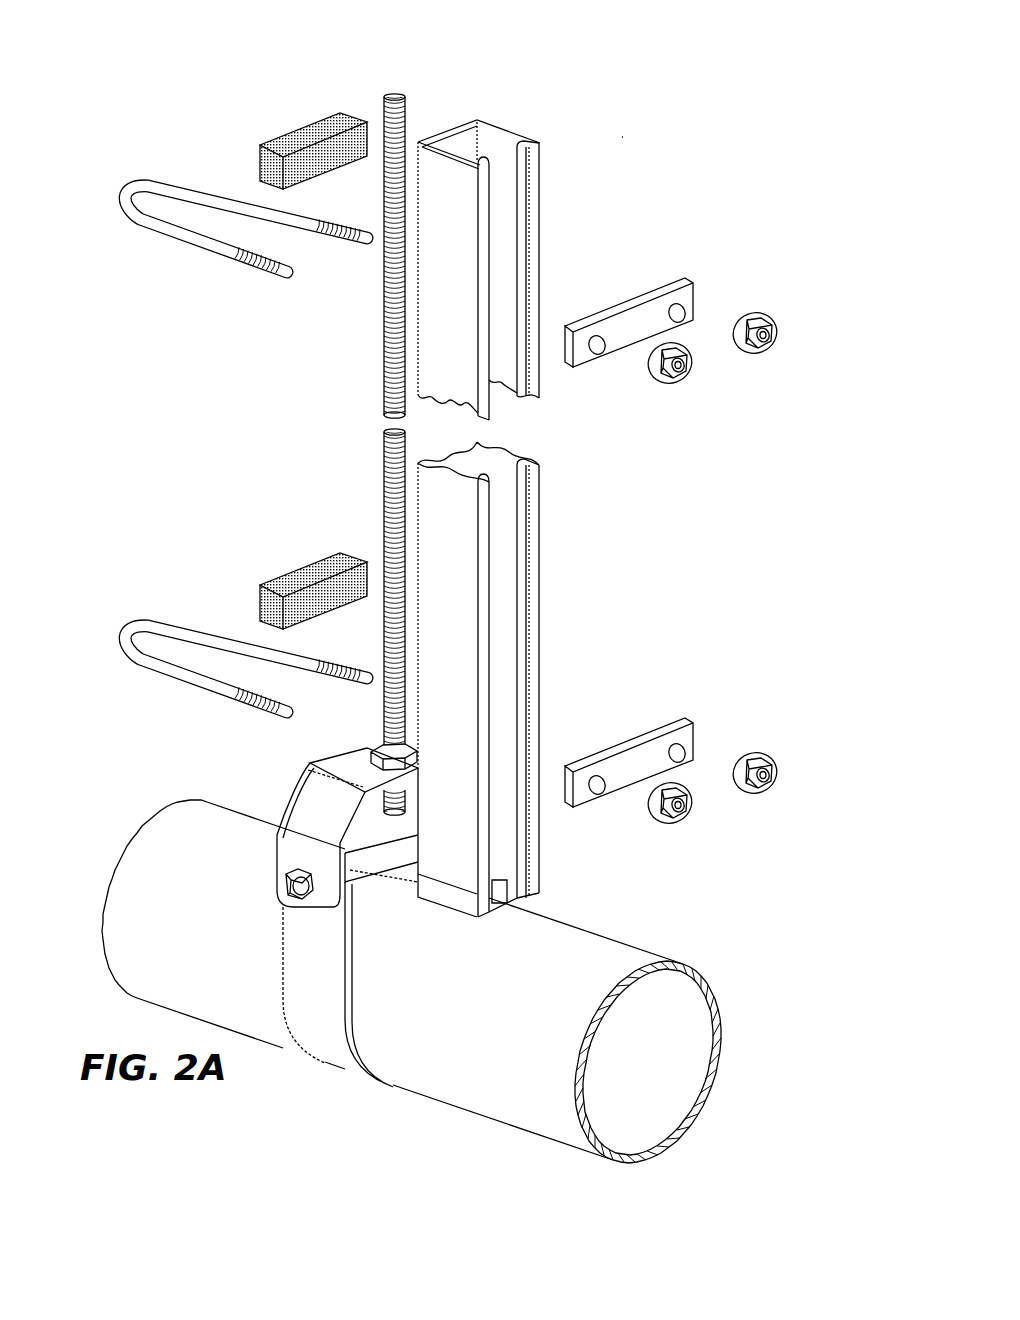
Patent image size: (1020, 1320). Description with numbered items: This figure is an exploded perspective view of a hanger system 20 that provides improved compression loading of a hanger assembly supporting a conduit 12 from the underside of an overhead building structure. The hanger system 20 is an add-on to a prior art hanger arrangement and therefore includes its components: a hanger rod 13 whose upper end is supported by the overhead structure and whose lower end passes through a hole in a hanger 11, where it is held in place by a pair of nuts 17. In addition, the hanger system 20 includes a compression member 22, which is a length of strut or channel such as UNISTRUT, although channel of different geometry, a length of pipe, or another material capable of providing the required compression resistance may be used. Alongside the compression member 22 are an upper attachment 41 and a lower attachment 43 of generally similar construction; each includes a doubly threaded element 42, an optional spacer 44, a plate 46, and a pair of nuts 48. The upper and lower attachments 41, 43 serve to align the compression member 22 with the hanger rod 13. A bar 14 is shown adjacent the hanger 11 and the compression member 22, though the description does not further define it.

The hanger 11 is at (297, 779).
The conduit 12 is at (604, 951).
The hanger rod 13 is at (408, 130).
The cross bar 14 is at (378, 863).
The nuts 17 is at (419, 798).
The hanger system 20 is at (627, 135).
The compression member 22 is at (538, 228).
The upper attachment 41 is at (160, 271).
The doubly threaded element 42 is at (123, 187).
The lower attachment 43 is at (117, 570).
The spacer 44 is at (287, 132).
The plate 46 is at (693, 288).
The nuts 48 is at (783, 317).